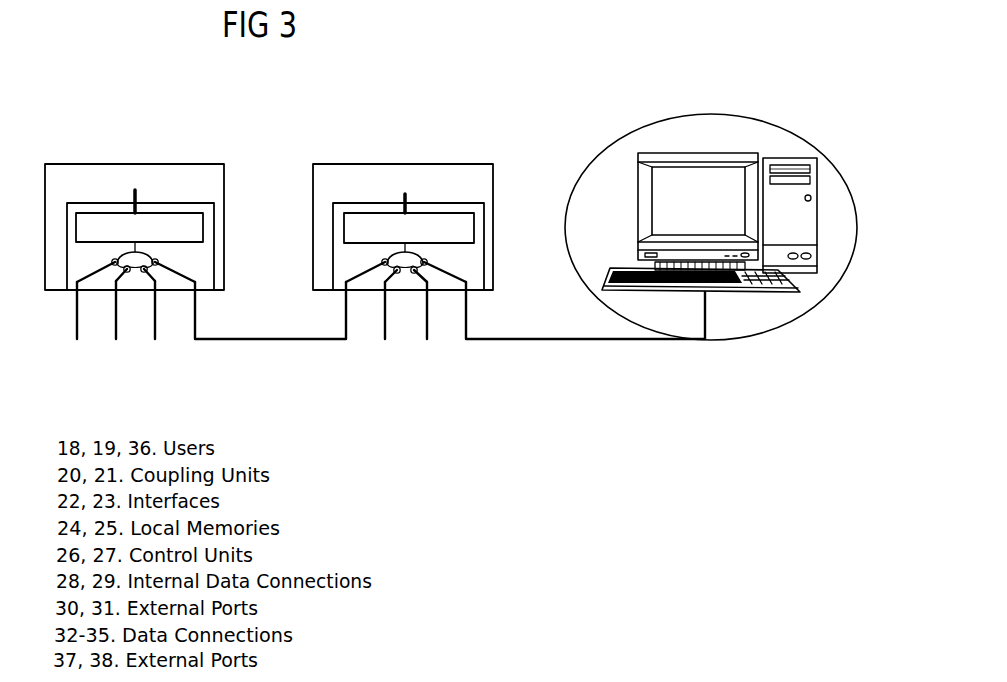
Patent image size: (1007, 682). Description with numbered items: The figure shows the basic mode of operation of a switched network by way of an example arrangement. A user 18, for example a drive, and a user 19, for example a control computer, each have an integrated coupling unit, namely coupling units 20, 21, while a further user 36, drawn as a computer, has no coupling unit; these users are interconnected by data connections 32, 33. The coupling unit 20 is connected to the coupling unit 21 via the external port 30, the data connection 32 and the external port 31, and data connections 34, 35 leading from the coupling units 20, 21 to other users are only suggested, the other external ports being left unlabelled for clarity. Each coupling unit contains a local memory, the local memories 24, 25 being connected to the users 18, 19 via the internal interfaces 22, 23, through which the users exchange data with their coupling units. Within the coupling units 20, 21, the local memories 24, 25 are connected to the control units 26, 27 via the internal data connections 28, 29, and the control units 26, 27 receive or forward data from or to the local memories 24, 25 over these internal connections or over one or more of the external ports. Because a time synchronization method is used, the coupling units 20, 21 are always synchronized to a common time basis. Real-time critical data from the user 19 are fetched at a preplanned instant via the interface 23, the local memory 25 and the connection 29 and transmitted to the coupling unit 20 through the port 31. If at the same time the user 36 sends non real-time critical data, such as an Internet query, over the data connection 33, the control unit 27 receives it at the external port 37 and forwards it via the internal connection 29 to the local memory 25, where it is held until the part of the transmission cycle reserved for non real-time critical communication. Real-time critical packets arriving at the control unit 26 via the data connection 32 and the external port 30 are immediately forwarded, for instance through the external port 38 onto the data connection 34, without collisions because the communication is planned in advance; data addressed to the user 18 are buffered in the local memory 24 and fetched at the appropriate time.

The user 18 is at (173, 176).
The user 19 is at (343, 187).
The user 36 is at (743, 115).
The coupling unit 20 is at (85, 253).
The coupling unit 21 is at (480, 227).
The internal interface 22 is at (135, 190).
The internal interface 23 is at (410, 197).
The local memory 24 is at (188, 223).
The local memory 25 is at (450, 225).
The control unit 26 is at (136, 270).
The control unit 27 is at (405, 272).
The internal data connection 28 is at (140, 252).
The internal data connection 29 is at (387, 257).
The external port 30 is at (158, 263).
The external port 31 is at (382, 264).
The data connection 32 is at (268, 342).
The data connection 33 is at (572, 343).
The data connection 34 is at (116, 318).
The data connection 35 is at (427, 325).
The external port 37 is at (427, 262).
The external port 38 is at (112, 262).